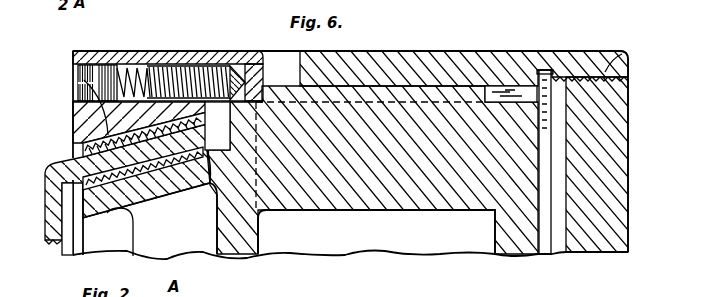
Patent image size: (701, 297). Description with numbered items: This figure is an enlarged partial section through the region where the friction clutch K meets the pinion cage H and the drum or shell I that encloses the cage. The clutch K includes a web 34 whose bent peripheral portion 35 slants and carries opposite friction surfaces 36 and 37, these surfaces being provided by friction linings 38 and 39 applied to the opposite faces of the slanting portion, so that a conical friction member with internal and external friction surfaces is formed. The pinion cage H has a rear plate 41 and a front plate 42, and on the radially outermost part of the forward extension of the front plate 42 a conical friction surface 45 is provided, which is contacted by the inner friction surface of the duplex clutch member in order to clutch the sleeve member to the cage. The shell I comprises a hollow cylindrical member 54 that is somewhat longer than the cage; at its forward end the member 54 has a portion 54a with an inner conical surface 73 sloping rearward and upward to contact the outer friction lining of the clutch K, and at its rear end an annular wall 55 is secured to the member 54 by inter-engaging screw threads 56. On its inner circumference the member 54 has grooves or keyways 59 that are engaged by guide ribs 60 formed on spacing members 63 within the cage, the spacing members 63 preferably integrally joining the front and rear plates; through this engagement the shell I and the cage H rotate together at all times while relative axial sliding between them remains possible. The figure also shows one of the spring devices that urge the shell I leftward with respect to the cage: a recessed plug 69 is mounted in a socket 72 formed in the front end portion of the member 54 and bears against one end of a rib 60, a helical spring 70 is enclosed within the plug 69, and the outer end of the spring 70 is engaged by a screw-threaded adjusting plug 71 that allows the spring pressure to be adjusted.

The pinion cage drum or shell I is at (431, 51).
The pinion cage H is at (525, 180).
The friction clutch K is at (118, 189).
The web 34 is at (50, 228).
The bent peripheral portion 35 is at (209, 180).
The friction surface 36 is at (78, 78).
The friction surface 37 is at (113, 188).
The friction lining 38 is at (172, 68).
The friction lining 39 is at (183, 188).
The rear plate 41 is at (522, 240).
The front plate 42 is at (248, 240).
The friction surface 45 is at (162, 168).
The hollow cylindrical member 54 is at (478, 60).
The forward end portion 54a is at (93, 117).
The wall 55 is at (612, 104).
The screw threads 56 is at (612, 68).
The grooves or keyways 59 is at (522, 96).
The guide ribs 60 is at (387, 95).
The spacing members 63 is at (412, 192).
The recessed plug 69 is at (246, 63).
The helical spring 70 is at (197, 66).
The screw-threaded adjusting plug 71 is at (102, 65).
The socket 72 is at (135, 66).
The inner conical surface 73 is at (83, 133).